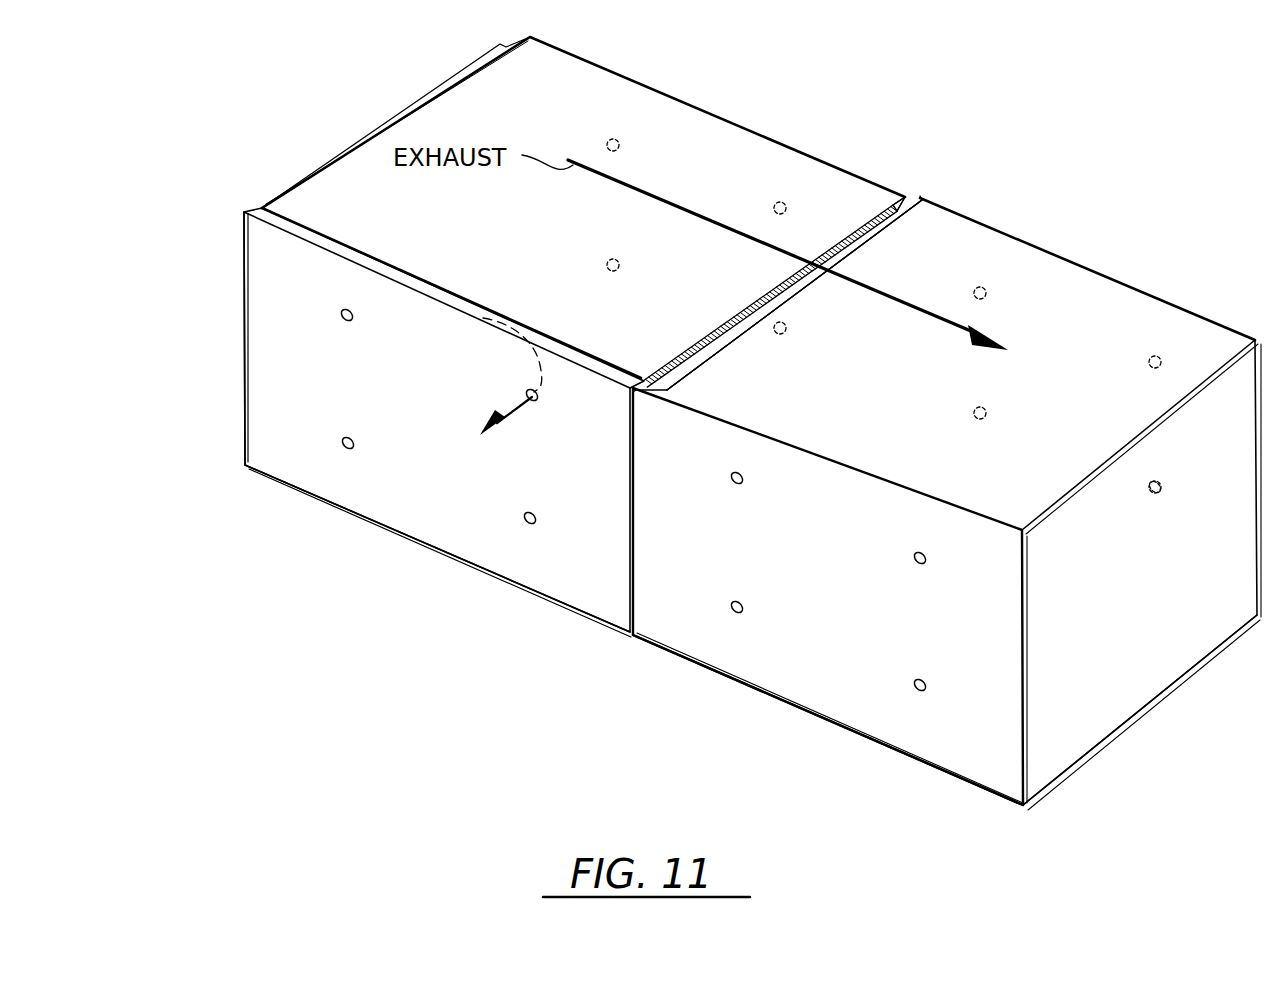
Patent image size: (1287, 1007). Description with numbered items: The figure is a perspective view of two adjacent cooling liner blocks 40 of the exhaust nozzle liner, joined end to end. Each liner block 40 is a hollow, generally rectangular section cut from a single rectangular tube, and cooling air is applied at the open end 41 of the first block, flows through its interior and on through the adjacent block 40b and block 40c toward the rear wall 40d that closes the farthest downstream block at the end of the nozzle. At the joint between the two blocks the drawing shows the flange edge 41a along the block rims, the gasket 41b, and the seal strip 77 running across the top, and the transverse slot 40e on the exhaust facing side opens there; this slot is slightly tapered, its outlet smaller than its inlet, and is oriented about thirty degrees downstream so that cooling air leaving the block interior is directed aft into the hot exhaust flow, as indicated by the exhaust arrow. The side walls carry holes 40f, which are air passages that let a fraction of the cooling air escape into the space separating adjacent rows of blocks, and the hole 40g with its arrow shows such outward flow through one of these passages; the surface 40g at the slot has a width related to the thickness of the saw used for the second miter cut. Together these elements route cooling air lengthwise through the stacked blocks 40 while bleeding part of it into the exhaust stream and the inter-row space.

The liner block 40 is at (430, 413).
The liner block 40b is at (507, 562).
The liner block 40c is at (770, 682).
The wall 40d is at (1162, 678).
The transverse slot 40e is at (787, 293).
The holes 40f is at (620, 148).
The surface 40g is at (532, 403).
The open end 41 is at (245, 378).
The flange 41a is at (287, 192).
The gasket 41b is at (733, 333).
The seal strip at module joint 77 is at (908, 199).